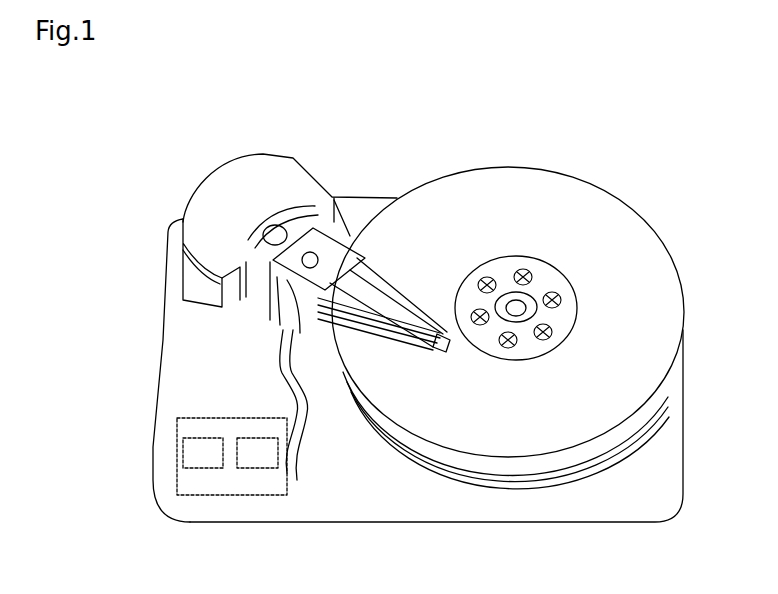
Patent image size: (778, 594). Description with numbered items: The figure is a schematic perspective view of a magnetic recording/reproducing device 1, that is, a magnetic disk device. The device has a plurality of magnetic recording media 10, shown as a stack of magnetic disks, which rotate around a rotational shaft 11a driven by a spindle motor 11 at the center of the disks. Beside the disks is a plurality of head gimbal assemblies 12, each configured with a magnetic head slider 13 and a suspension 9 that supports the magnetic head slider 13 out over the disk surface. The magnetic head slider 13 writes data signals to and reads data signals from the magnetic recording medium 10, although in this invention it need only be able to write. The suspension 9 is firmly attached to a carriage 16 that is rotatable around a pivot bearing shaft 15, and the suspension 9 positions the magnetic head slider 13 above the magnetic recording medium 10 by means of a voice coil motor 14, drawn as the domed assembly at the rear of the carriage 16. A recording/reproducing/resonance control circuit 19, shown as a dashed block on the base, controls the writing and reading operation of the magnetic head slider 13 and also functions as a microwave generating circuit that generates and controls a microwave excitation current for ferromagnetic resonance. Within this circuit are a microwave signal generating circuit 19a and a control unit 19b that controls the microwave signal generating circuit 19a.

The magnetic recording/reproducing device 1 is at (470, 87).
The suspension 9 is at (382, 365).
The magnetic recording medium 10 is at (508, 282).
The spindle motor 11 is at (507, 297).
The rotational shaft 11a is at (562, 264).
The head gimbal assembly 12 is at (506, 442).
The magnetic head slider 13 is at (456, 377).
The voice coil motor 14 is at (290, 172).
The pivot bearing shaft 15 is at (316, 255).
The carriage 16 is at (241, 292).
The recording/reproducing/resonance control circuit 19 is at (232, 494).
The microwave signal generating circuit 19a is at (203, 448).
The control unit 19b is at (258, 448).